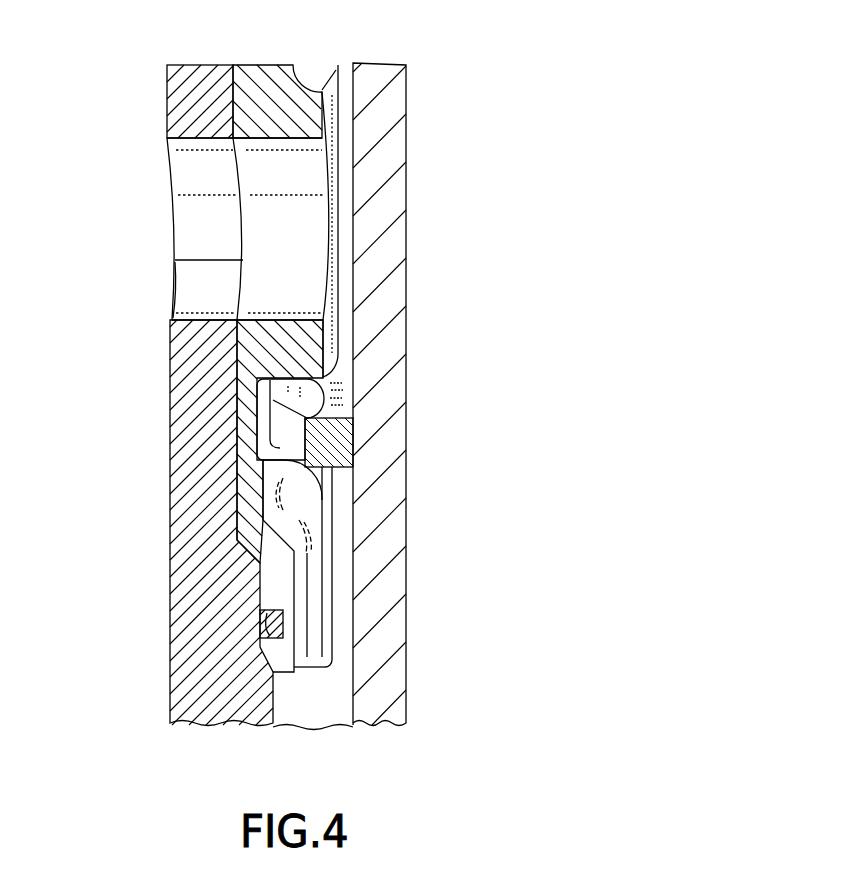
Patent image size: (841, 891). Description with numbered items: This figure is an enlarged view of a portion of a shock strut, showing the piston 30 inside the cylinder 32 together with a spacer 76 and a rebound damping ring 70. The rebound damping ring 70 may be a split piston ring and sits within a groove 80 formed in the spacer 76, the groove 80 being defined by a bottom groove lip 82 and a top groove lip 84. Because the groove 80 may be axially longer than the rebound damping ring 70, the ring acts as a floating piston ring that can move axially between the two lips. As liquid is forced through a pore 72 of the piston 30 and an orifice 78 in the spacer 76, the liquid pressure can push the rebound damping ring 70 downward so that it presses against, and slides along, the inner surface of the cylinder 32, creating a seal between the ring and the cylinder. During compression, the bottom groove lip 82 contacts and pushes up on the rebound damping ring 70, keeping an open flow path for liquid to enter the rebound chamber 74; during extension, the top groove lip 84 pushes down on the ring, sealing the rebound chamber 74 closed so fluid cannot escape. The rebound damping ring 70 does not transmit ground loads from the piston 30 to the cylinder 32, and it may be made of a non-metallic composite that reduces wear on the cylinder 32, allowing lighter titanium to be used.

The piston 30 is at (170, 520).
The cylinder 32 is at (407, 135).
The rebound damping ring 70 is at (355, 443).
The pore 72 is at (173, 172).
The rebound chamber 74 is at (340, 687).
The spacer 76 is at (237, 540).
The orifice 78 is at (173, 260).
The groove 80 is at (305, 418).
The bottom groove lip 82 is at (322, 500).
The top groove lip 84 is at (340, 394).